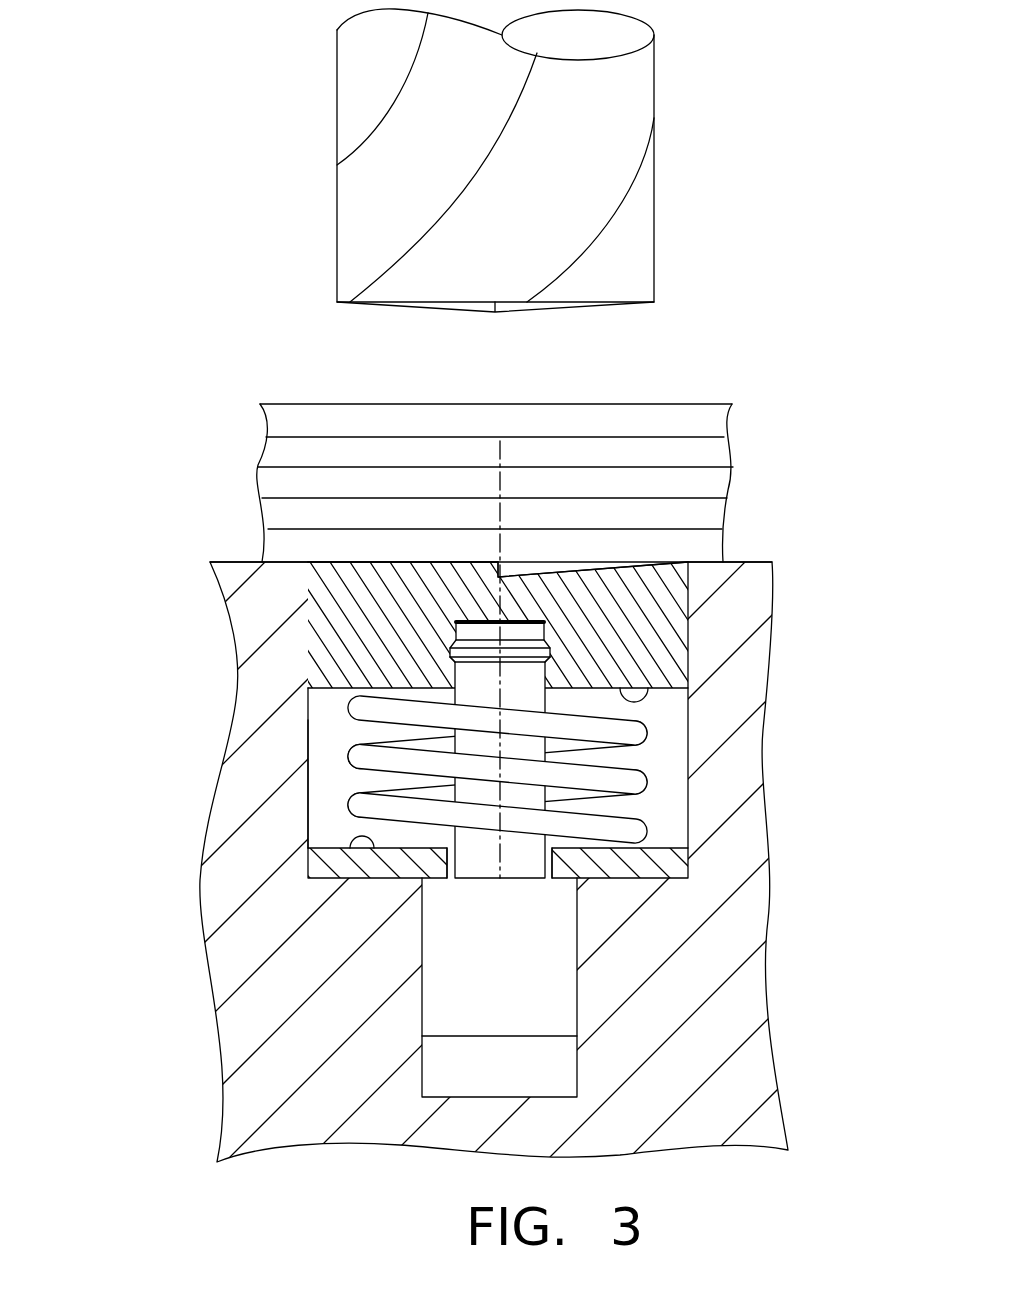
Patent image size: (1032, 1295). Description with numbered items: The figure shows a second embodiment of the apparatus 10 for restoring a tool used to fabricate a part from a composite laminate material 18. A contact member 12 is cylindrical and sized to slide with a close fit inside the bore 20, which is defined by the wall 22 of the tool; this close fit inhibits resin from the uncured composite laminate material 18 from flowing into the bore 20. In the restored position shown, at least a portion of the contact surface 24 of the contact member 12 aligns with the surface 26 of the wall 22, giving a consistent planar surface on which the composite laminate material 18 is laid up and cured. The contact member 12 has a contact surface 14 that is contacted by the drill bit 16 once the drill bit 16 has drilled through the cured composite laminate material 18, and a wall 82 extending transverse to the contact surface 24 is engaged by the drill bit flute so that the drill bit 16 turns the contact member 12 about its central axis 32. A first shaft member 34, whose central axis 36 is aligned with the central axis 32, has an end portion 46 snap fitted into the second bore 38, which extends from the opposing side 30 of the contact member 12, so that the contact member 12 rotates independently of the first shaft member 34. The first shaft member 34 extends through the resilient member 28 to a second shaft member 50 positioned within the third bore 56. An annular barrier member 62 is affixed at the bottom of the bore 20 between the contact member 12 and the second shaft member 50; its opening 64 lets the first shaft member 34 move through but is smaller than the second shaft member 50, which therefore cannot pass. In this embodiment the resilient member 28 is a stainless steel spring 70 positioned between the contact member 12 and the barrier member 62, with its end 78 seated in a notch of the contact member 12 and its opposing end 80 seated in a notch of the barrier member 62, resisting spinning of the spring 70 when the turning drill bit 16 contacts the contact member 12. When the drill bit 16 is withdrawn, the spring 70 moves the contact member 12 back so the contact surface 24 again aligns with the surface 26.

The apparatus 10 is at (185, 444).
The contact member 12 is at (325, 635).
The contact surface 14 is at (452, 560).
The drill bit 16 is at (607, 142).
The composite laminate material 18 is at (590, 484).
The bore 20 is at (301, 787).
The wall 22 is at (735, 1080).
The contact surface 24 is at (345, 560).
The surface 26 is at (760, 562).
The resilient member 28 is at (602, 767).
The opposing side 30 is at (327, 700).
The central axis 32 is at (505, 487).
The first shaft member 34 is at (445, 862).
The central axis 36 is at (503, 723).
The second bore 38 is at (432, 640).
The end portion 46 is at (446, 665).
The second shaft member 50 is at (512, 988).
The third bore 56 is at (562, 1079).
The barrier member 62 is at (447, 860).
The opening 64 is at (528, 860).
The spring 70 is at (627, 785).
The end 78 is at (655, 716).
The opposing end 80 is at (367, 838).
The wall 82 is at (500, 570).